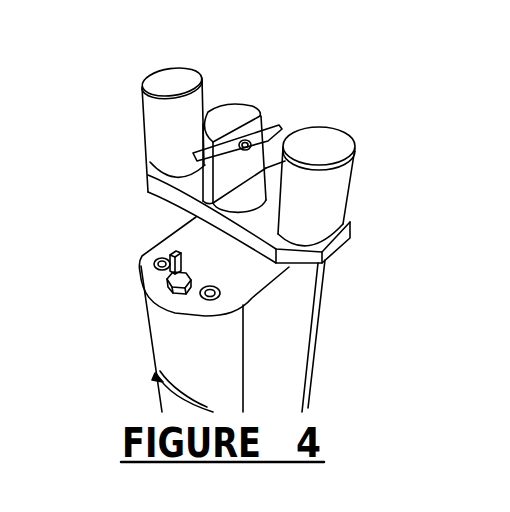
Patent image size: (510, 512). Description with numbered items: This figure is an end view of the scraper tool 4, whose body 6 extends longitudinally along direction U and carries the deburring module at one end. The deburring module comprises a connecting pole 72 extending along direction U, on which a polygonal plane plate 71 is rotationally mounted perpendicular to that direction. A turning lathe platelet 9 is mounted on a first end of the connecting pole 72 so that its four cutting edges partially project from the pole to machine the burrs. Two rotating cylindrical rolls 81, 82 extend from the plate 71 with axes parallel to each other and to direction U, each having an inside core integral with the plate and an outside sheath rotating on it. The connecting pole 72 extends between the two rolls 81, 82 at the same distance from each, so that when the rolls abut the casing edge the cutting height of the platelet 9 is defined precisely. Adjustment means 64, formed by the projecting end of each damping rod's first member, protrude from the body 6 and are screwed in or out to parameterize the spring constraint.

The scraper tool 4 is at (337, 351).
The body 6 is at (183, 348).
The turning lathe platelet 9 is at (247, 140).
The adjustment means 64 is at (153, 264).
The plane plate 71 is at (148, 175).
The connecting pole 72 is at (219, 117).
The rotating cylindrical roll 81 is at (160, 125).
The rotating cylindrical roll 82 is at (334, 198).